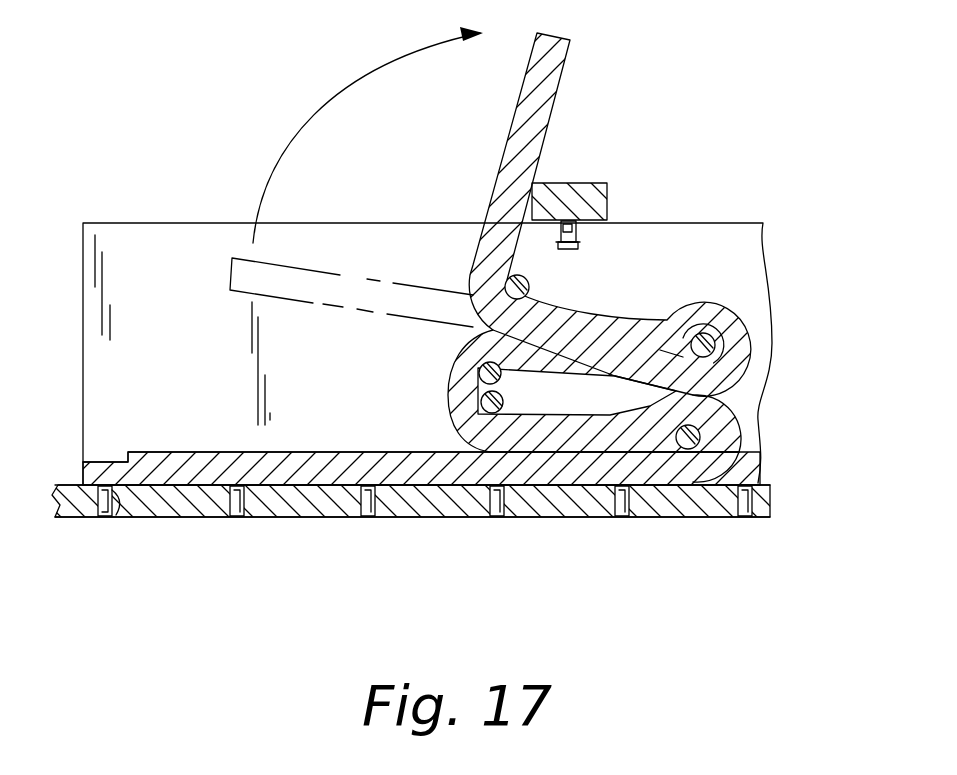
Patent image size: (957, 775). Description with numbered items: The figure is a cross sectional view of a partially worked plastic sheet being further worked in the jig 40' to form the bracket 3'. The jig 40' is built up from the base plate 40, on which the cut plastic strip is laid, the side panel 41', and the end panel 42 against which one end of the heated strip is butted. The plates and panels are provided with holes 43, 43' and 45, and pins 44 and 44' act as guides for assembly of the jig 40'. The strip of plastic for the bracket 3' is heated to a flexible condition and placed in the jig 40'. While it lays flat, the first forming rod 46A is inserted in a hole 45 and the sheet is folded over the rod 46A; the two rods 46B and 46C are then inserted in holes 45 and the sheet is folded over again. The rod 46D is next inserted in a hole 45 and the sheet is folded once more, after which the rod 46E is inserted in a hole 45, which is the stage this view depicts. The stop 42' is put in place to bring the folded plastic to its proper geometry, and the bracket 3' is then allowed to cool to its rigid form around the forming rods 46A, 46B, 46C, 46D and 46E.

The bracket 3' is at (599, 257).
The side panel 41' is at (356, 177).
The stop 42' is at (601, 179).
The hole 43' is at (610, 241).
The pin 44' is at (550, 248).
The forming rod 46A is at (740, 413).
The forming rod 46B is at (480, 410).
The forming rod 46C is at (480, 372).
The forming rod 46D is at (698, 328).
The forming rod 46E is at (529, 282).
The hole 45 is at (530, 298).
The end panel 42 is at (421, 441).
The hole 43 is at (421, 543).
The pin 44 is at (146, 527).
The base plate 40 is at (411, 527).
The jig 40' is at (474, 575).